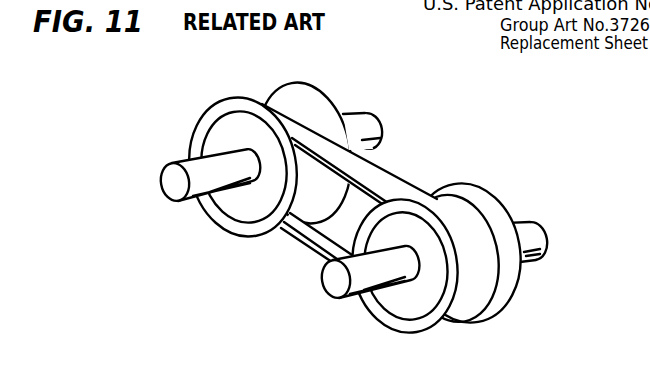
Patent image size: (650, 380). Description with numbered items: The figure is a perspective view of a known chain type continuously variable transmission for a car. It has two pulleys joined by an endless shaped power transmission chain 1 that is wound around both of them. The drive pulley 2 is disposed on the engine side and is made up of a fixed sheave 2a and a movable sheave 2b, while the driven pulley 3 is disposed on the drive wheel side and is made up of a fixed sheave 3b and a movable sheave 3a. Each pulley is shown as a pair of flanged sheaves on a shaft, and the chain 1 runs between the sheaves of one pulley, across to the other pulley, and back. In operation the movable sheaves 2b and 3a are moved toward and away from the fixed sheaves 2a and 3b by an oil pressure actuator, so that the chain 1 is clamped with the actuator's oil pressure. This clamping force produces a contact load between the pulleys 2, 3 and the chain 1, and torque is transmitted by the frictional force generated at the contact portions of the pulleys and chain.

The power transmission chain 1 is at (401, 165).
The drive pulley 2 is at (475, 243).
The fixed sheave 2a is at (471, 191).
The movable sheave 2b is at (397, 302).
The driven pulley 3 is at (315, 143).
The movable sheave 3a is at (299, 88).
The fixed sheave 3b is at (238, 208).